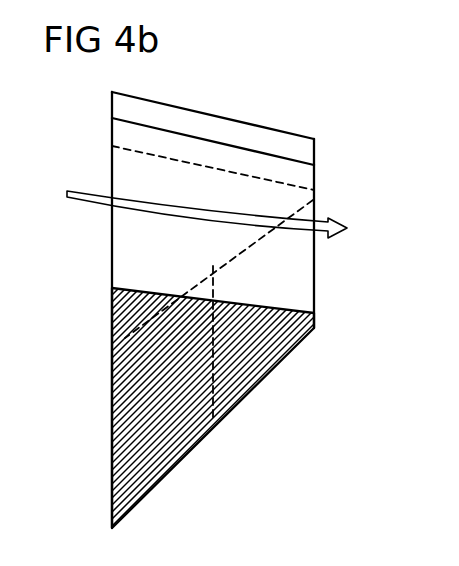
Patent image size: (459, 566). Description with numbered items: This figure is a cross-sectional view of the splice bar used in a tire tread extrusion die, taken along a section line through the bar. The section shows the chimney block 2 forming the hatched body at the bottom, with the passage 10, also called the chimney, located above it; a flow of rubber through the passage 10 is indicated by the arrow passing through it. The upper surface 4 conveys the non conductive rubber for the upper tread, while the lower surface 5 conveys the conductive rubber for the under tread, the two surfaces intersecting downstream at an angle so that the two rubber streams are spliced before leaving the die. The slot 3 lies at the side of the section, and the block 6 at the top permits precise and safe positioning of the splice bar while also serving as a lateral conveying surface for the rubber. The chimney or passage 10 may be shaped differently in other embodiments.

The chimney block 2 is at (184, 462).
The slot 3 is at (318, 260).
The upper surface 4 is at (227, 264).
The lower surface 5 is at (294, 183).
The block 6 is at (217, 125).
The passage 10 is at (132, 233).